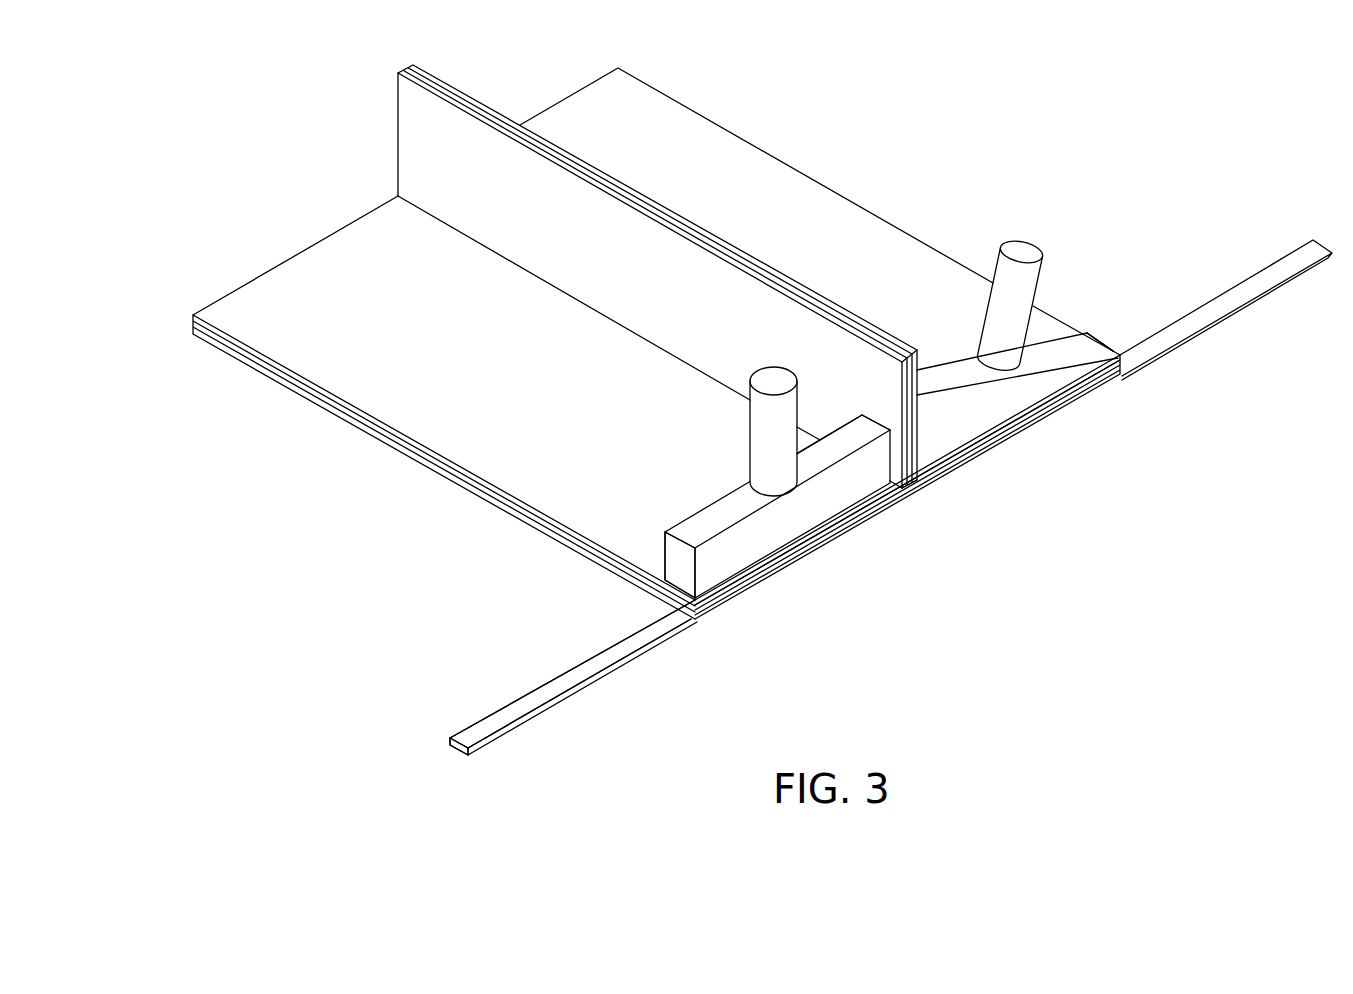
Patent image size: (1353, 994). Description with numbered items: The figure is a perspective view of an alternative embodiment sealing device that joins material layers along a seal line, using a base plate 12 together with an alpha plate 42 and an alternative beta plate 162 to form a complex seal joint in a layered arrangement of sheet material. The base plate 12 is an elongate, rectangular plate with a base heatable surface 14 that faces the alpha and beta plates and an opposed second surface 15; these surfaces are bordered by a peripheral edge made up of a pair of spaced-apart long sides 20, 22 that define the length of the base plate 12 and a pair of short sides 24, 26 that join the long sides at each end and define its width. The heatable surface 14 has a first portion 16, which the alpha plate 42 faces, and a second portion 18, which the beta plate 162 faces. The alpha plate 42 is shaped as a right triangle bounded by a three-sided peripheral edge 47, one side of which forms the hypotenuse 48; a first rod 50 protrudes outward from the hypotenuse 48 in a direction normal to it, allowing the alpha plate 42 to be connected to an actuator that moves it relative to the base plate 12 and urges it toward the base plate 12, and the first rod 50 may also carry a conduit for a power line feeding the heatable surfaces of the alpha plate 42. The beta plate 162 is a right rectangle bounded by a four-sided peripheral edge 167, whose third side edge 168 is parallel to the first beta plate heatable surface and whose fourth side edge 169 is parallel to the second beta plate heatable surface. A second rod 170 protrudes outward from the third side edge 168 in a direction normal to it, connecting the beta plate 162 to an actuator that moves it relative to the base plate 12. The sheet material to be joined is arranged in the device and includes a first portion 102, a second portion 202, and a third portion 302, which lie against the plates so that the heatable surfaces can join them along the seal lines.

The first portion 102 is at (412, 423).
The second portion 202 is at (833, 202).
The beta plate 162 is at (778, 523).
The peripheral edge 167 is at (847, 435).
The third side edge 168 is at (876, 422).
The fourth side edge 169 is at (675, 563).
The second rod 170 is at (755, 432).
The alpha plate 42 is at (993, 393).
The peripheral edge 47 is at (1110, 322).
The hypotenuse 48 is at (1100, 342).
The first rod 50 is at (1031, 291).
The base plate 12 is at (637, 643).
The heatable surface 14 is at (562, 688).
The second surface 15 is at (585, 690).
The base plate long side 20 is at (450, 737).
The base plate long side 22 is at (470, 753).
The base plate short side 24 is at (455, 748).
The base plate short side 26 is at (1320, 243).
The second portion 18 is at (903, 510).
The third portion 302 is at (908, 500).
The first portion 16 is at (1123, 387).